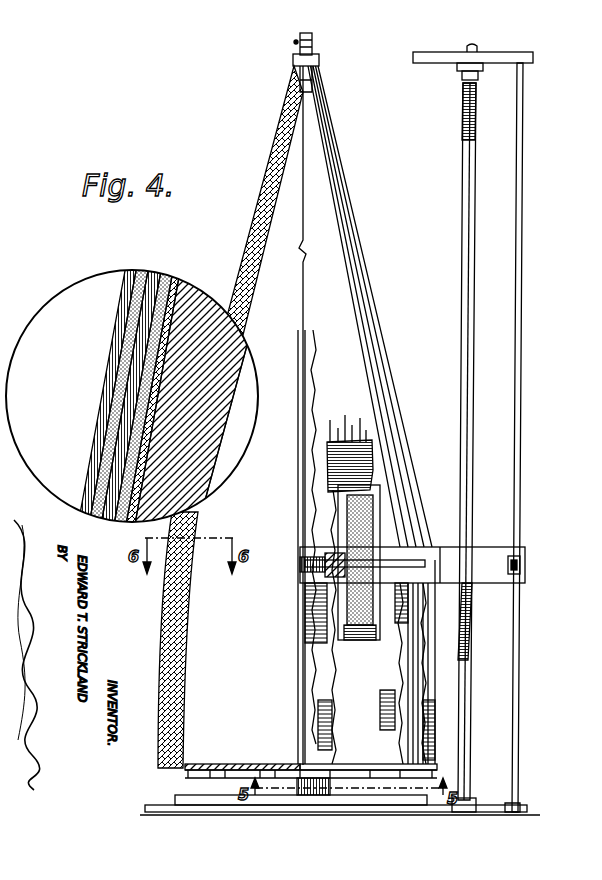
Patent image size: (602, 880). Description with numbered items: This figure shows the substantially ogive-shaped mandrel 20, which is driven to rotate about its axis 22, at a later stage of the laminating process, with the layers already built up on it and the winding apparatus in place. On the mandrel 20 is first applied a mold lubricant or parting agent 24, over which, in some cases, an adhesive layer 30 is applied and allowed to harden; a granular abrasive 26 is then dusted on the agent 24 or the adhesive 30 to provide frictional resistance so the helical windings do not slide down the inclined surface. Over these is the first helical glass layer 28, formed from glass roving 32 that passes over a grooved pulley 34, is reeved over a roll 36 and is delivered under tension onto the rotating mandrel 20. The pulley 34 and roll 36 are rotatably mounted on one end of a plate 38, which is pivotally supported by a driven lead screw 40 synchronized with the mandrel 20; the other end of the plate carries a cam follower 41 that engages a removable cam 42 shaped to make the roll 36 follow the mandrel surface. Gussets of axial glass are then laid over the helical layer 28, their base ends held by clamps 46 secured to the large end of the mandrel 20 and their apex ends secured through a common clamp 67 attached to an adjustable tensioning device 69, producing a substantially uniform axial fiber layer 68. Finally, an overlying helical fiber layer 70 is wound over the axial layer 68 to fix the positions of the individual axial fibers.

The mandrel 20 is at (250, 301).
The axis 22 is at (303, 227).
The mold lubricant or parting agent 24 is at (178, 299).
The abrasive 26 is at (350, 519).
The helical glass layer 28 is at (378, 488).
The adhesive layer 30 is at (175, 313).
The glass roving 32 is at (395, 560).
The grooved pulley 34 is at (335, 586).
The roll 36 is at (312, 575).
The plate 38 is at (434, 550).
The lead screw 40 is at (462, 265).
The cam follower 41 is at (522, 563).
The cam 42 is at (522, 438).
The clamps 46 is at (236, 775).
The common clamp 67 is at (320, 61).
The axial fiber layer 68 is at (361, 313).
The adjustable tensioning device 69 is at (294, 43).
The overlying helical fiber layer 70 is at (366, 354).